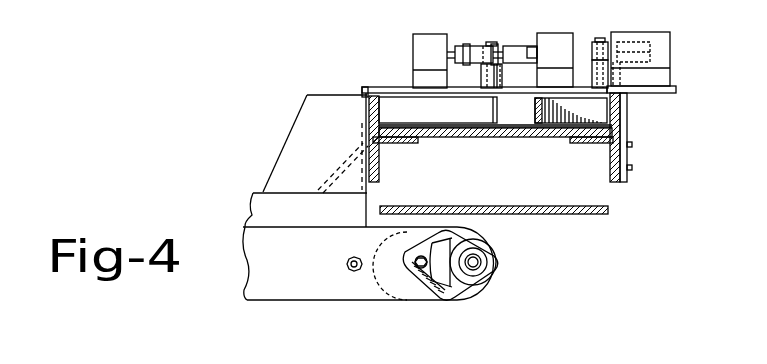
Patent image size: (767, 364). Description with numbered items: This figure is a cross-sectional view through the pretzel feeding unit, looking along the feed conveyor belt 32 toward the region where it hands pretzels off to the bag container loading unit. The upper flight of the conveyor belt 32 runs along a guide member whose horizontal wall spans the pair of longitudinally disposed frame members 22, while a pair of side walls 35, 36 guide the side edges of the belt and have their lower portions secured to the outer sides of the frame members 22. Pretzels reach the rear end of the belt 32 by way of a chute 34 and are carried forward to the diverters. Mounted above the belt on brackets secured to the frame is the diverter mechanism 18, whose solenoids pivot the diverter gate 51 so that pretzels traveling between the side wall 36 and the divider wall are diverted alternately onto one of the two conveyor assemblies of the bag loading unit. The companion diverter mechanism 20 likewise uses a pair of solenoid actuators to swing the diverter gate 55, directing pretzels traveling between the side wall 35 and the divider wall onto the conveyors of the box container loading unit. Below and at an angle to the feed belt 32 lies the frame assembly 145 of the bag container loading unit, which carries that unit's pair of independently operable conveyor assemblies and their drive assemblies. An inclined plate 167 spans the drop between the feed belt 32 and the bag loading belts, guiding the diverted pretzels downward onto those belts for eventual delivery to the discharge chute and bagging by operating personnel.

The diverter mechanism 18 is at (560, 32).
The diverter mechanism 20 is at (676, 52).
The frame members 22 is at (380, 170).
The conveyor belt 32 is at (522, 206).
The chute 34 is at (493, 140).
The side wall 35 is at (617, 118).
The side wall 36 is at (368, 118).
The diverter gate 51 is at (398, 103).
The diverter gate 55 is at (587, 108).
The frame assembly 145 is at (318, 293).
The inclined plate 167 is at (340, 162).